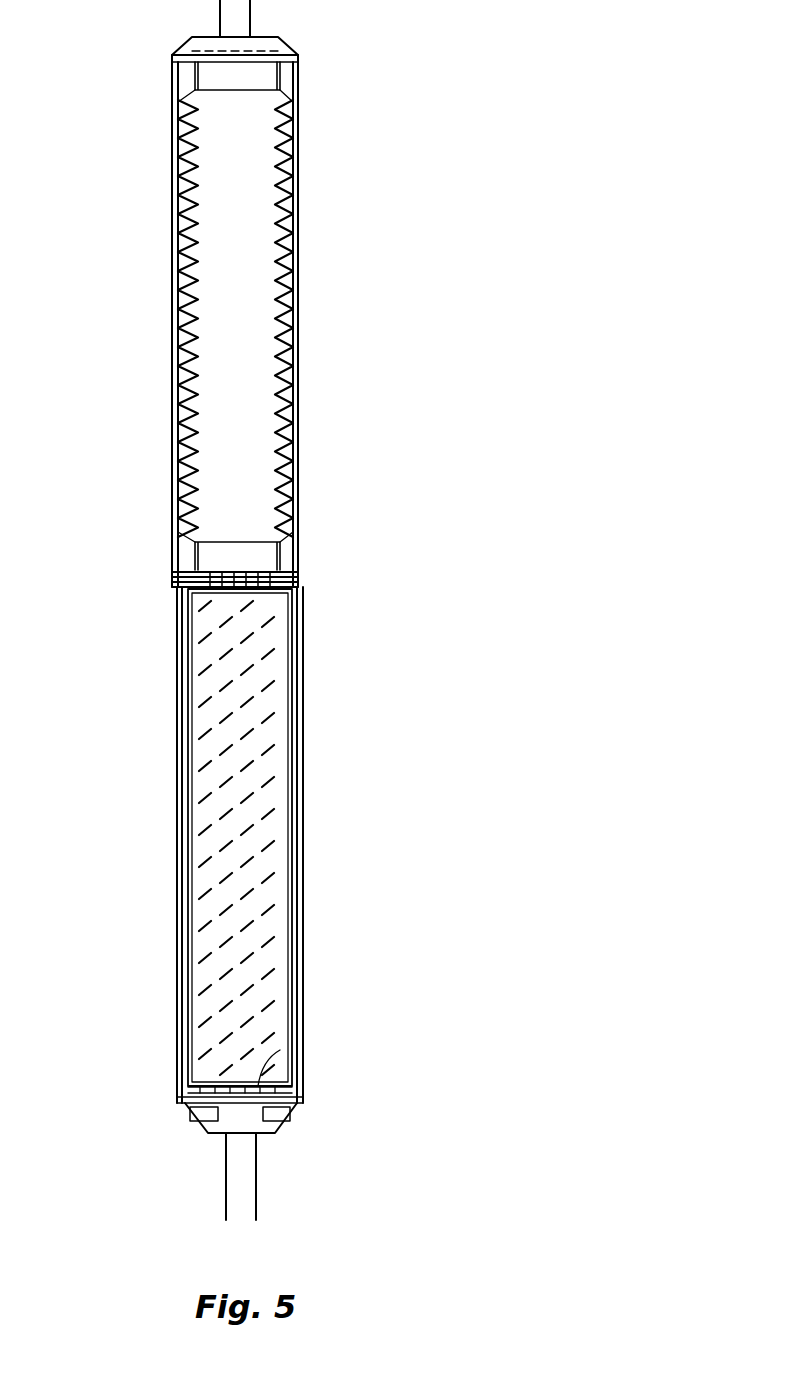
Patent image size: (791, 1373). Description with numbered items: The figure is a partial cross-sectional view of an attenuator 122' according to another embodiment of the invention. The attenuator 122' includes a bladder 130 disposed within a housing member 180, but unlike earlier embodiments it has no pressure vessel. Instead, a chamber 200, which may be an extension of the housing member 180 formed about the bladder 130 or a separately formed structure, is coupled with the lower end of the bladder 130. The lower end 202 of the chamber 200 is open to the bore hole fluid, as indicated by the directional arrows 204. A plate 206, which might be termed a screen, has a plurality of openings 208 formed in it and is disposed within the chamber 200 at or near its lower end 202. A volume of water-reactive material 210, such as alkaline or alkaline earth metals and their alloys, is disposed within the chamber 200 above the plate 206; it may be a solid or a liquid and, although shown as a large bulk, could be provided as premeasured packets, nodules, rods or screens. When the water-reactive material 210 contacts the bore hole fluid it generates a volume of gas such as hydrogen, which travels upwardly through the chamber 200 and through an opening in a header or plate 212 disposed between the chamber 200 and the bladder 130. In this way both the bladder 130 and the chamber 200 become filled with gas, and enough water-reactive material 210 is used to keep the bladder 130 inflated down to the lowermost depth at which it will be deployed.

The attenuator 122' is at (323, 568).
The bladder 130 is at (283, 90).
The housing member 180 is at (300, 302).
The header or plate 212 is at (296, 558).
The water-reactive material 210 is at (285, 703).
The chamber 200 is at (296, 823).
The plate 206 is at (258, 1086).
The openings 208 is at (268, 1090).
The lower end of the chamber 202 is at (163, 1166).
The directional arrows 204 is at (204, 1111).